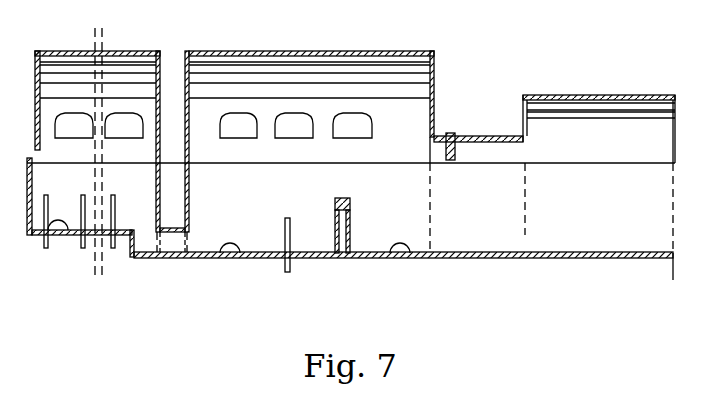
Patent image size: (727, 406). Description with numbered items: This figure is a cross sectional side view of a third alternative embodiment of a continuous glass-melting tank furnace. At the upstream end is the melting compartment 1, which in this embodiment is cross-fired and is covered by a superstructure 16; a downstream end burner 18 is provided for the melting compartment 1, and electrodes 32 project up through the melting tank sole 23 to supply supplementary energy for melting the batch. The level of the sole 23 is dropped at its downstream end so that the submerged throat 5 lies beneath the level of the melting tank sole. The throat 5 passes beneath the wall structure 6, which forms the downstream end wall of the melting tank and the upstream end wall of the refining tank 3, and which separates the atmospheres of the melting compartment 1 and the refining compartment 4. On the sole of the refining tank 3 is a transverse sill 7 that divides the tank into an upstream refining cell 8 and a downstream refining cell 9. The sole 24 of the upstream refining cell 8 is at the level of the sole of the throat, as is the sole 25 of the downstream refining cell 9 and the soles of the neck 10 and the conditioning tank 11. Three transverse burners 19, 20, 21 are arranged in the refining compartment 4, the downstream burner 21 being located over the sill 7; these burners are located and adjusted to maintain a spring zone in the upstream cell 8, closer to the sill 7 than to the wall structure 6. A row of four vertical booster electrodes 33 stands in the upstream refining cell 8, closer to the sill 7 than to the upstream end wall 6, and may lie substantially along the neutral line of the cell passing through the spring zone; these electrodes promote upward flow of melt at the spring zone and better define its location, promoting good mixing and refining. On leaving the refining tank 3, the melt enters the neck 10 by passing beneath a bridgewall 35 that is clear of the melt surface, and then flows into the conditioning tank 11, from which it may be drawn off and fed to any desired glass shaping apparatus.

The melting compartment 1 is at (149, 46).
The refining tank 3 is at (314, 191).
The refining compartment 4 is at (424, 47).
The submerged throat 5 is at (172, 242).
The wall structure 6 is at (186, 62).
The transverse sill 7 is at (348, 203).
The upstream refining cell 8 is at (244, 216).
The downstream refining cell 9 is at (386, 216).
The neck 10 is at (468, 218).
The conditioning tank 11 is at (593, 218).
The superstructure 16 is at (43, 50).
The downstream end burner 18 is at (114, 136).
The transverse burner 19 is at (229, 136).
The transverse burner 20 is at (284, 136).
The transverse burner 21 is at (342, 136).
The melting tank sole 23 is at (64, 231).
The sole of the upstream refining cell 24 is at (236, 259).
The sole of the downstream refining cell 25 is at (407, 259).
The electrodes 32 is at (46, 249).
The booster electrodes 33 is at (291, 270).
The bridgewall 35 is at (454, 131).